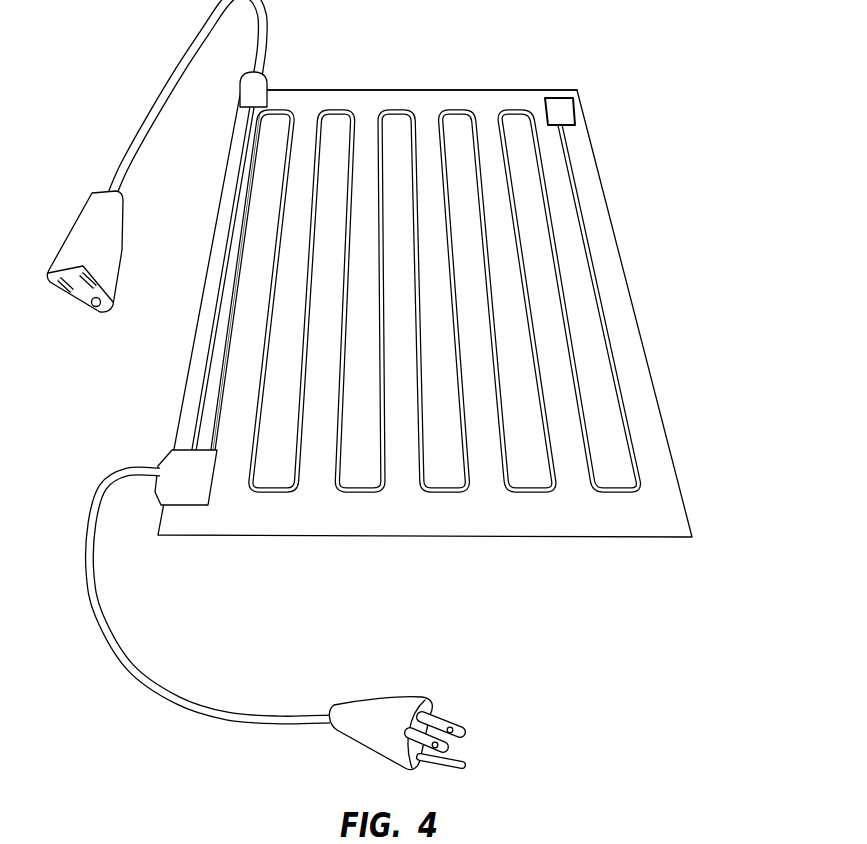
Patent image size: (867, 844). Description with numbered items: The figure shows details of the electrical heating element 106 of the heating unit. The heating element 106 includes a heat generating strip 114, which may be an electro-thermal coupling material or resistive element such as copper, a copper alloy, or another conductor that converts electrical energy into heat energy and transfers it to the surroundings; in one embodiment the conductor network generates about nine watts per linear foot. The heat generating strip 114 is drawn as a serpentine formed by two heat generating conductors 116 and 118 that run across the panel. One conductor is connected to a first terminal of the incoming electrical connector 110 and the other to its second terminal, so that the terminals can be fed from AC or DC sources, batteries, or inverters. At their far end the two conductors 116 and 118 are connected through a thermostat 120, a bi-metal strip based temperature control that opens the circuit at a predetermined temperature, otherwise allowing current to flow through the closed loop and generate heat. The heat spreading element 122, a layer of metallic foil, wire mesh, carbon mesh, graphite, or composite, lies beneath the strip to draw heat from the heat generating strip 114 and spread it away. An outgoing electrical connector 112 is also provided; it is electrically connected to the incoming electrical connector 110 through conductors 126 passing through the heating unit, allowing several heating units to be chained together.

The heating element 106 is at (650, 242).
The incoming electrical connector 110 is at (385, 708).
The outgoing electrical connector 112 is at (84, 228).
The heat generating strip 114 is at (628, 499).
The heat generating conductor 116 is at (217, 438).
The heat generating conductor 118 is at (217, 452).
The thermostat 120 is at (568, 112).
The heat spreading element 122 is at (439, 80).
The conductors 126 is at (200, 402).